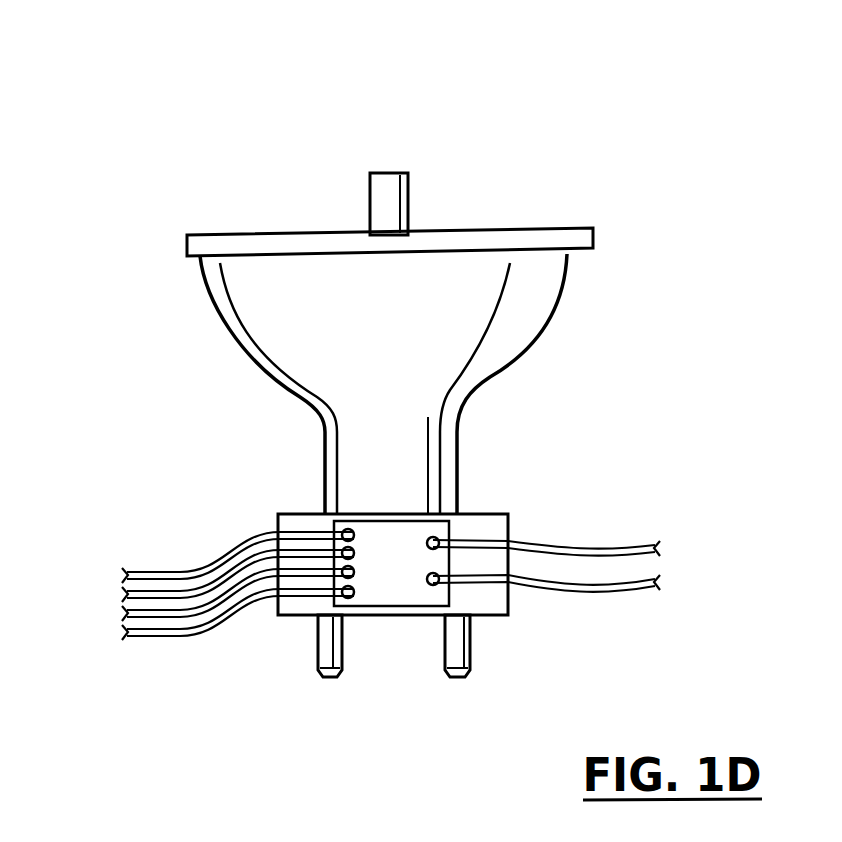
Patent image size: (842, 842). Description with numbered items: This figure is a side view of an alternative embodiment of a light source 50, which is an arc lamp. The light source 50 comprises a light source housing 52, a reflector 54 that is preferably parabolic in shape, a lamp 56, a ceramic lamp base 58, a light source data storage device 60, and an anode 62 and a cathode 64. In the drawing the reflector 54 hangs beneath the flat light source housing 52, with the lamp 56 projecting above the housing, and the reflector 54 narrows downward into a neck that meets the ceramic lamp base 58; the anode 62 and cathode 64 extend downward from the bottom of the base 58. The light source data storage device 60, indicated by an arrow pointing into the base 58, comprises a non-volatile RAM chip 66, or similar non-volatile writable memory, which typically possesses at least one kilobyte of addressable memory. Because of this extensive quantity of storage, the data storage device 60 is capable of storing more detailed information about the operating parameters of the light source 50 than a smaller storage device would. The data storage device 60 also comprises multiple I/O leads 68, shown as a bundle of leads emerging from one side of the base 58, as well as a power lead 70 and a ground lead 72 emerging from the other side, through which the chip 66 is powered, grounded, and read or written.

The light source 50 is at (347, 53).
The light source housing 52 is at (551, 200).
The reflector 54 is at (557, 318).
The lamp 56 is at (368, 190).
The ceramic lamp base 58 is at (508, 514).
The light source data storage device 60 is at (381, 472).
The anode 62 is at (315, 647).
The cathode 64 is at (470, 643).
The non-volatile RAM chip 66 is at (378, 607).
The I/O leads 68 is at (127, 552).
The power lead 70 is at (628, 546).
The ground lead 72 is at (625, 594).